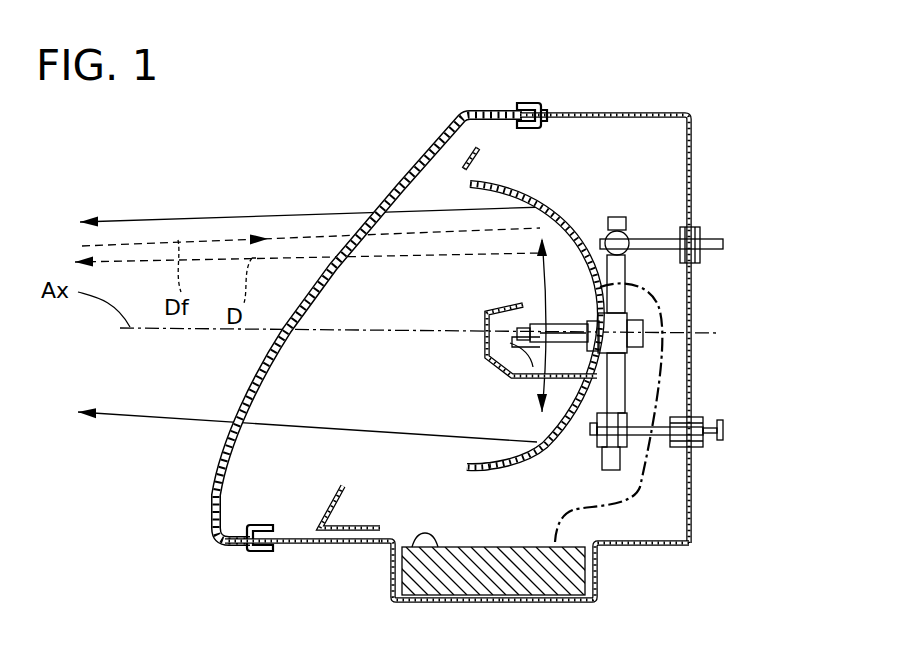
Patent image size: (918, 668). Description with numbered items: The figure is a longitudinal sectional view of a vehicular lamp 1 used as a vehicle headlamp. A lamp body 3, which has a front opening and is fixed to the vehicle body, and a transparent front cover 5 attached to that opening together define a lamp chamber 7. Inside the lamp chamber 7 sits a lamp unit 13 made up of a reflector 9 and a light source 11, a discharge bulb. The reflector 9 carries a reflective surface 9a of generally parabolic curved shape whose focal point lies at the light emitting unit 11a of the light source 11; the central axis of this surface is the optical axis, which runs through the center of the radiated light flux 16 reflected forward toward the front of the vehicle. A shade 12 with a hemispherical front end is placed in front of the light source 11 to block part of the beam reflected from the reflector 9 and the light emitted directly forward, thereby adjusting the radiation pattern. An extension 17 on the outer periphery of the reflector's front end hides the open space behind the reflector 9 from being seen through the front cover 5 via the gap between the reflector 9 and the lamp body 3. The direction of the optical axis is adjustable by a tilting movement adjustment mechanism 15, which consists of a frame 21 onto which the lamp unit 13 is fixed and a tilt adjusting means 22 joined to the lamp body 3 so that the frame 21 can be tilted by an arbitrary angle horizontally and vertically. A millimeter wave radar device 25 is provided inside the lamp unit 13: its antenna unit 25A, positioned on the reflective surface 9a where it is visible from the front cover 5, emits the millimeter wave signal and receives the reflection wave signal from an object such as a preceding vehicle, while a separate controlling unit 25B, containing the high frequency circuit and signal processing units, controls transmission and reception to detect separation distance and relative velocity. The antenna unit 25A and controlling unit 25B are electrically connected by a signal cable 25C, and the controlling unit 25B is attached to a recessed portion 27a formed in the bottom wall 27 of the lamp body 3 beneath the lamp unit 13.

The vehicular lamp 1 is at (622, 103).
The lamp body 3 is at (674, 109).
The front cover 5 is at (433, 141).
The lamp chamber 7 is at (575, 143).
The reflector 9 is at (488, 456).
The reflective surface 9a is at (540, 428).
The light source 11 is at (517, 353).
The light emitting unit 11a is at (540, 328).
The shade 12 is at (483, 350).
The lamp unit 13 is at (578, 200).
The tilting movement adjustment mechanism 15 is at (796, 135).
The radiated light flux 16 is at (297, 214).
The extension 17 is at (334, 488).
The frame 21 is at (617, 216).
The tilt adjusting means 22 is at (668, 240).
The millimeter wave radar device 25 is at (477, 544).
The antenna unit 25A is at (478, 200).
The controlling unit 25B is at (391, 597).
The signal cable 25C is at (645, 478).
The bottom wall 27 is at (333, 547).
The recessed portion 27a is at (588, 543).